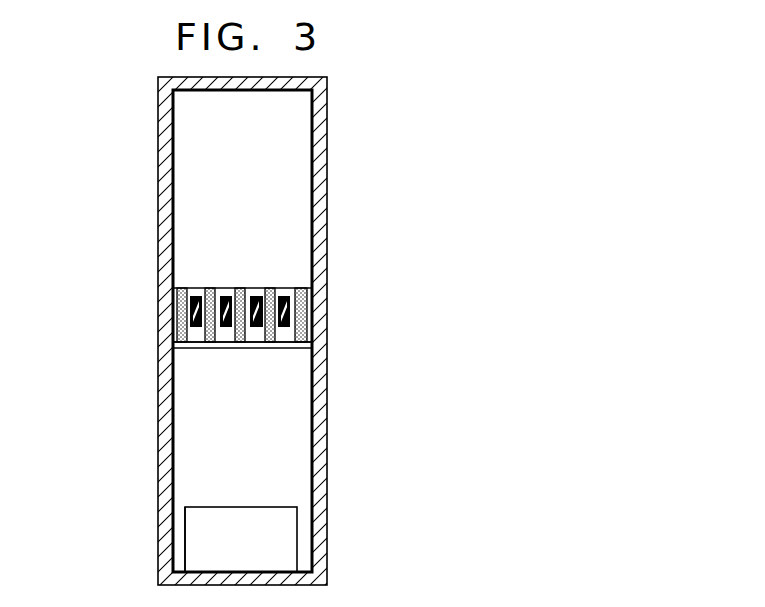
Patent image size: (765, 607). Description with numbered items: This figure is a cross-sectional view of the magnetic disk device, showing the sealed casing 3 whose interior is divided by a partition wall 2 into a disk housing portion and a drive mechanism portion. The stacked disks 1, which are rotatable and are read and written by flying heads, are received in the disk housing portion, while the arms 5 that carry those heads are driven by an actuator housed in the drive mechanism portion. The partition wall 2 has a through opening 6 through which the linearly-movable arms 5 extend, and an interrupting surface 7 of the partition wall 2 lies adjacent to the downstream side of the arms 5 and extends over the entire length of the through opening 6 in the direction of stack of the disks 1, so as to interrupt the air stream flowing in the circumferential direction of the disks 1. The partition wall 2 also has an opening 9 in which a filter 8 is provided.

The disk 1 is at (232, 272).
The partition wall 2 is at (262, 197).
The casing 3 is at (327, 123).
The arm 5 is at (189, 289).
The through opening 6 is at (289, 288).
The interrupting surface 7 is at (250, 342).
The filter 8 is at (247, 535).
The opening 9 is at (186, 552).